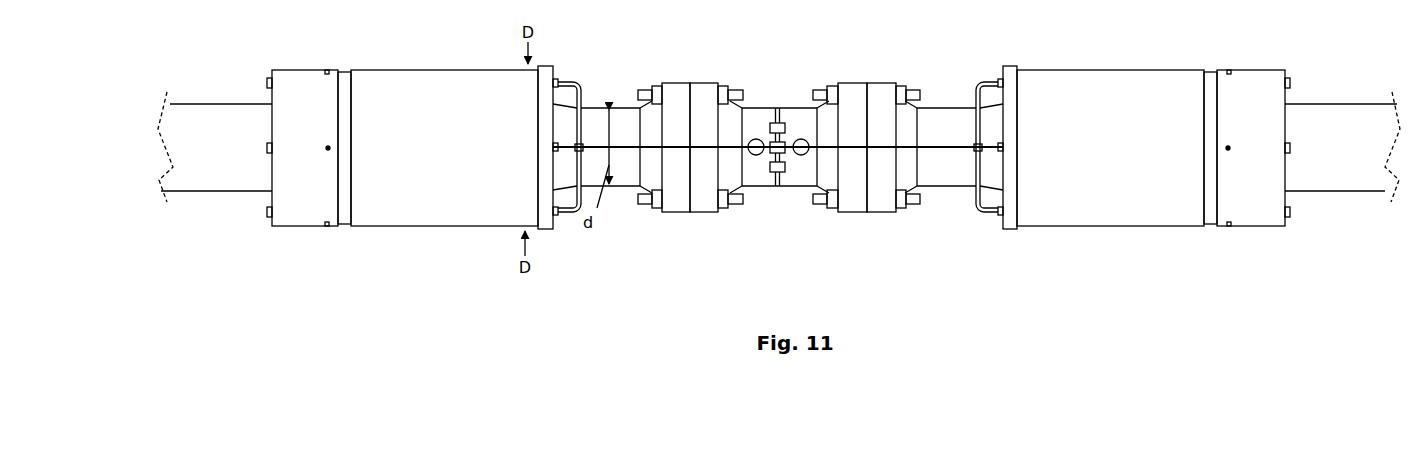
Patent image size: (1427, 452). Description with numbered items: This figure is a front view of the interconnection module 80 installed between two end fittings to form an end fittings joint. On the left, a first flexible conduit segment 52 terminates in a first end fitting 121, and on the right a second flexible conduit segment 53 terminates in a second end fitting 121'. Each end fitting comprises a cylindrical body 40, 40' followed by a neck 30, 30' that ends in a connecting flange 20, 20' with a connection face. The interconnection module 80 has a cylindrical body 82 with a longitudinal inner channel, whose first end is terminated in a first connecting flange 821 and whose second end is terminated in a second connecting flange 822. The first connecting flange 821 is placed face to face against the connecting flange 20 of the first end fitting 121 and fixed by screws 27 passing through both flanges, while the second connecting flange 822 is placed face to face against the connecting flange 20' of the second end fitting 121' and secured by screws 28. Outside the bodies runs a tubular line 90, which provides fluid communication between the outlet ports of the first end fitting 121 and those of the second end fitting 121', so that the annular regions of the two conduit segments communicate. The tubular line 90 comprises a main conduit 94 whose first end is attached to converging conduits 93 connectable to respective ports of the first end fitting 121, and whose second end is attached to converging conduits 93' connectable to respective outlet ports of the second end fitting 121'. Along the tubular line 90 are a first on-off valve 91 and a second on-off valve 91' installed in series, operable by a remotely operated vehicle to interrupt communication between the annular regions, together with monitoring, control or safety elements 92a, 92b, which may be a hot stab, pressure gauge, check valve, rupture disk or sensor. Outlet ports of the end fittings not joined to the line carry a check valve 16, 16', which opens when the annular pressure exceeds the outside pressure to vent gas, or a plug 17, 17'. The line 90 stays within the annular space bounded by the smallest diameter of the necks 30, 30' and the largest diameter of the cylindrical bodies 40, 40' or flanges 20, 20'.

The check valve 16 is at (237, 162).
The plug 17 is at (321, 146).
The cylindrical body 40 is at (454, 120).
The converging conduits 93 is at (564, 156).
The main conduit 94 is at (594, 146).
The screws 27 is at (641, 94).
The first connecting flange 821 is at (707, 88).
The interconnection module 80 is at (762, 86).
The second on-off valve 91' is at (808, 92).
The screws 28 is at (820, 93).
The monitoring, control or safety element 92a is at (778, 123).
The second connecting flange 822 is at (856, 92).
The tubular line 90 is at (945, 142).
The converging conduits 93' is at (988, 154).
The cylindrical body 40' is at (1101, 120).
The plug 17' is at (1242, 149).
The check valve 16' is at (1319, 166).
The first flexible conduit segment 52 is at (210, 182).
The first end fitting 121 is at (351, 199).
The neck 30 is at (602, 169).
The connecting flange 20 is at (695, 175).
The first on-off valve 91 is at (750, 194).
The monitoring, control or safety element 92b is at (778, 172).
The cylindrical body 82 is at (800, 182).
The connecting flange 20' is at (886, 176).
The neck 30' is at (954, 174).
The second end fitting 121' is at (1199, 191).
The second flexible conduit segment 53 is at (1347, 178).